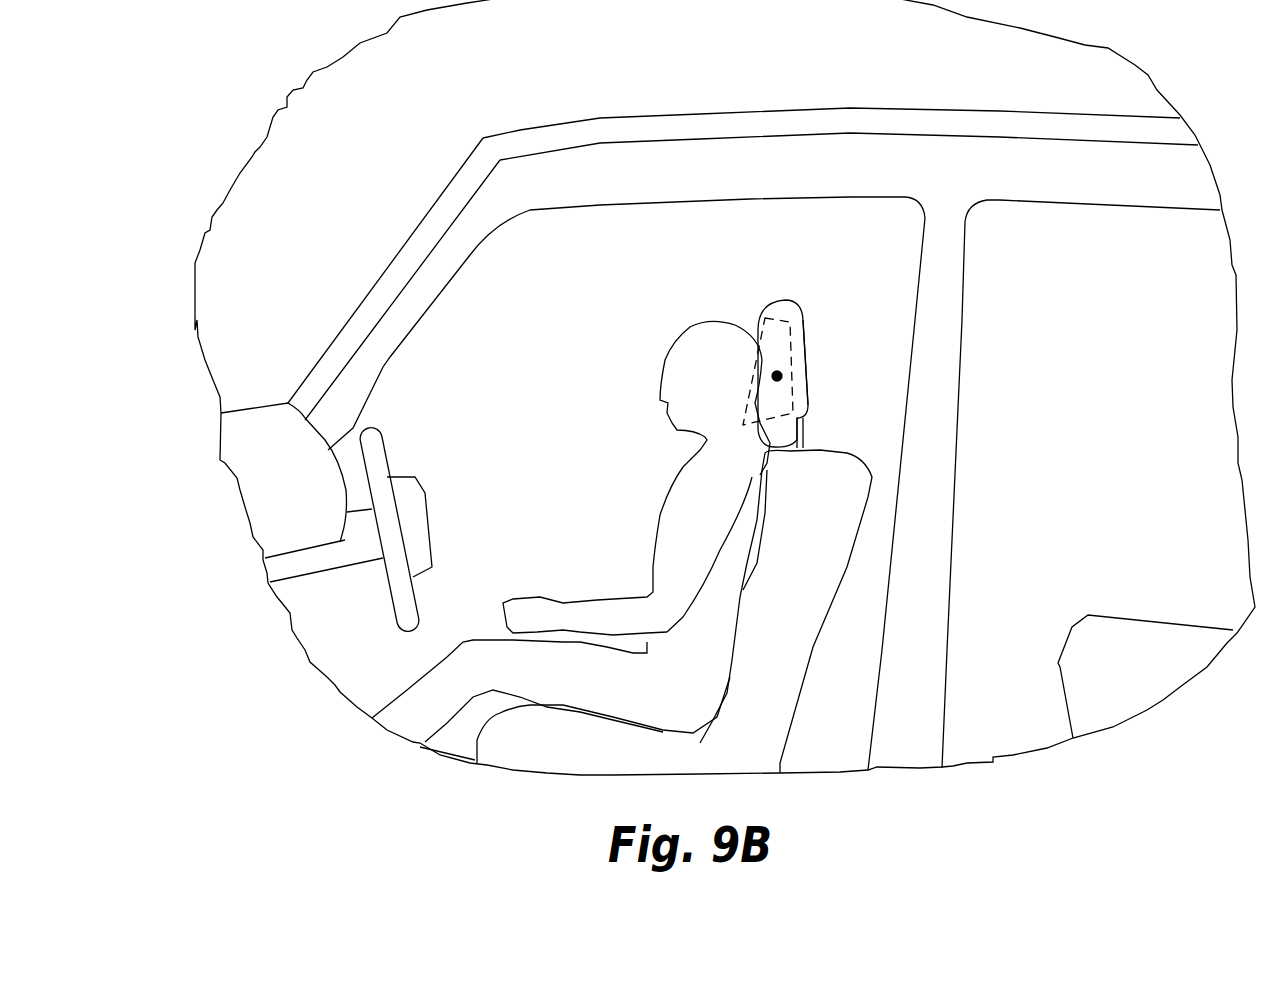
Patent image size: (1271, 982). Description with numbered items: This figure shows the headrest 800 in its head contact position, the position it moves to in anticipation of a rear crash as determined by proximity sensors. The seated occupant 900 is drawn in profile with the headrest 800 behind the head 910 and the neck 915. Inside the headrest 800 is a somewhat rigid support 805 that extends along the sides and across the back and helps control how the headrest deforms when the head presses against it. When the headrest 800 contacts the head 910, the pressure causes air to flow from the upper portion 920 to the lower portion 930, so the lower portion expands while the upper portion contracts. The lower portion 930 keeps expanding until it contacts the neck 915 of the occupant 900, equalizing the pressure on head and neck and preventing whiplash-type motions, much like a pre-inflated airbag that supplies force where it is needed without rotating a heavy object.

The headrest 800 is at (817, 371).
The support 805 is at (768, 318).
The occupant 900 is at (683, 523).
The head 910 is at (717, 378).
The neck 915 is at (730, 440).
The upper portion 920 is at (783, 335).
The lower portion 930 is at (800, 420).